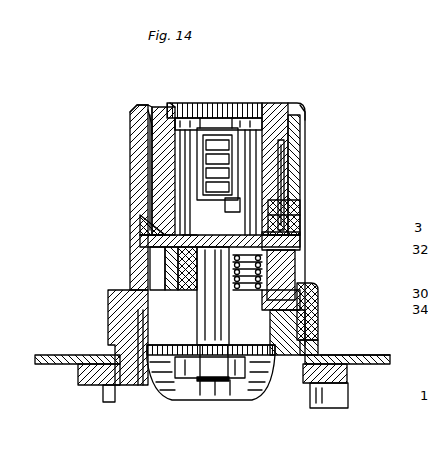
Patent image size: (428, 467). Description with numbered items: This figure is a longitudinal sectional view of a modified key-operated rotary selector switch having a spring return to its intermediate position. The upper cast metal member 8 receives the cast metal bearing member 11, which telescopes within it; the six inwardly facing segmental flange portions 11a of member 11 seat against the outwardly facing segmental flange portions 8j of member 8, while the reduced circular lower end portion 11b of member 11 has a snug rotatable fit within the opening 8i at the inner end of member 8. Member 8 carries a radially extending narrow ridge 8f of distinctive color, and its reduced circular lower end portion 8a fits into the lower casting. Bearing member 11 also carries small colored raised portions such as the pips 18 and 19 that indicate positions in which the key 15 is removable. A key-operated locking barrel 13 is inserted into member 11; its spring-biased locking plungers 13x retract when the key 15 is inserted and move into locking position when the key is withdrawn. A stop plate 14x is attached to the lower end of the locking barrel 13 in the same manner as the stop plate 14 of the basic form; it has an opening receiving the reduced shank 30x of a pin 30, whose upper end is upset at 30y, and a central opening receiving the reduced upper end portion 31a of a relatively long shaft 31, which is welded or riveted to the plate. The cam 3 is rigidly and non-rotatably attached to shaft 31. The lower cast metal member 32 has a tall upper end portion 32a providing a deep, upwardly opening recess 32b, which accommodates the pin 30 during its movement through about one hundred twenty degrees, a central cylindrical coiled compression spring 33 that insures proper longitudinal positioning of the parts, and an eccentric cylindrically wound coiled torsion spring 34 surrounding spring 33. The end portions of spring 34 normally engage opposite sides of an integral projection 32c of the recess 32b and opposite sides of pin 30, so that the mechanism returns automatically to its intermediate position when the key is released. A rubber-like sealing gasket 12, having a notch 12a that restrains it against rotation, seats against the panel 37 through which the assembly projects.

The cam 3 is at (230, 398).
The cast metal member 8 is at (290, 165).
The reduced circular lower end portion 8a is at (298, 208).
The radially extending narrow ridge 8f is at (143, 107).
The opening 8i is at (285, 188).
The outwardly facing segmental flange portions 8j is at (316, 142).
The bearing member 11 is at (283, 104).
The inwardly facing segmental flange portions 11a is at (300, 110).
The reduced circular lower end portion 11b is at (170, 228).
The sealing gasket 12 is at (345, 376).
The notch 12a is at (106, 390).
The locking barrel 13 is at (232, 104).
The locking plungers 13x is at (215, 140).
The stop plate 14 is at (148, 238).
The stop plate 14x is at (303, 214).
The key 15 is at (63, 243).
The raised portion or pip 18 is at (262, 105).
The raised portion or pip 19 is at (170, 104).
The pin 30 is at (180, 268).
The reduced upper end or shank portion 30x is at (180, 256).
The upset or riveted end 30y is at (165, 233).
The shaft 31 is at (214, 325).
The reduced upper end portion 31a is at (192, 240).
The lower cast metal member 32 is at (300, 310).
The upper end portion 32a is at (280, 272).
The recess 32b is at (288, 250).
The integral projection 32c is at (178, 265).
The coiled compression spring 33 is at (232, 273).
The coiled torsion spring 34 is at (125, 298).
The panel 37 is at (372, 358).